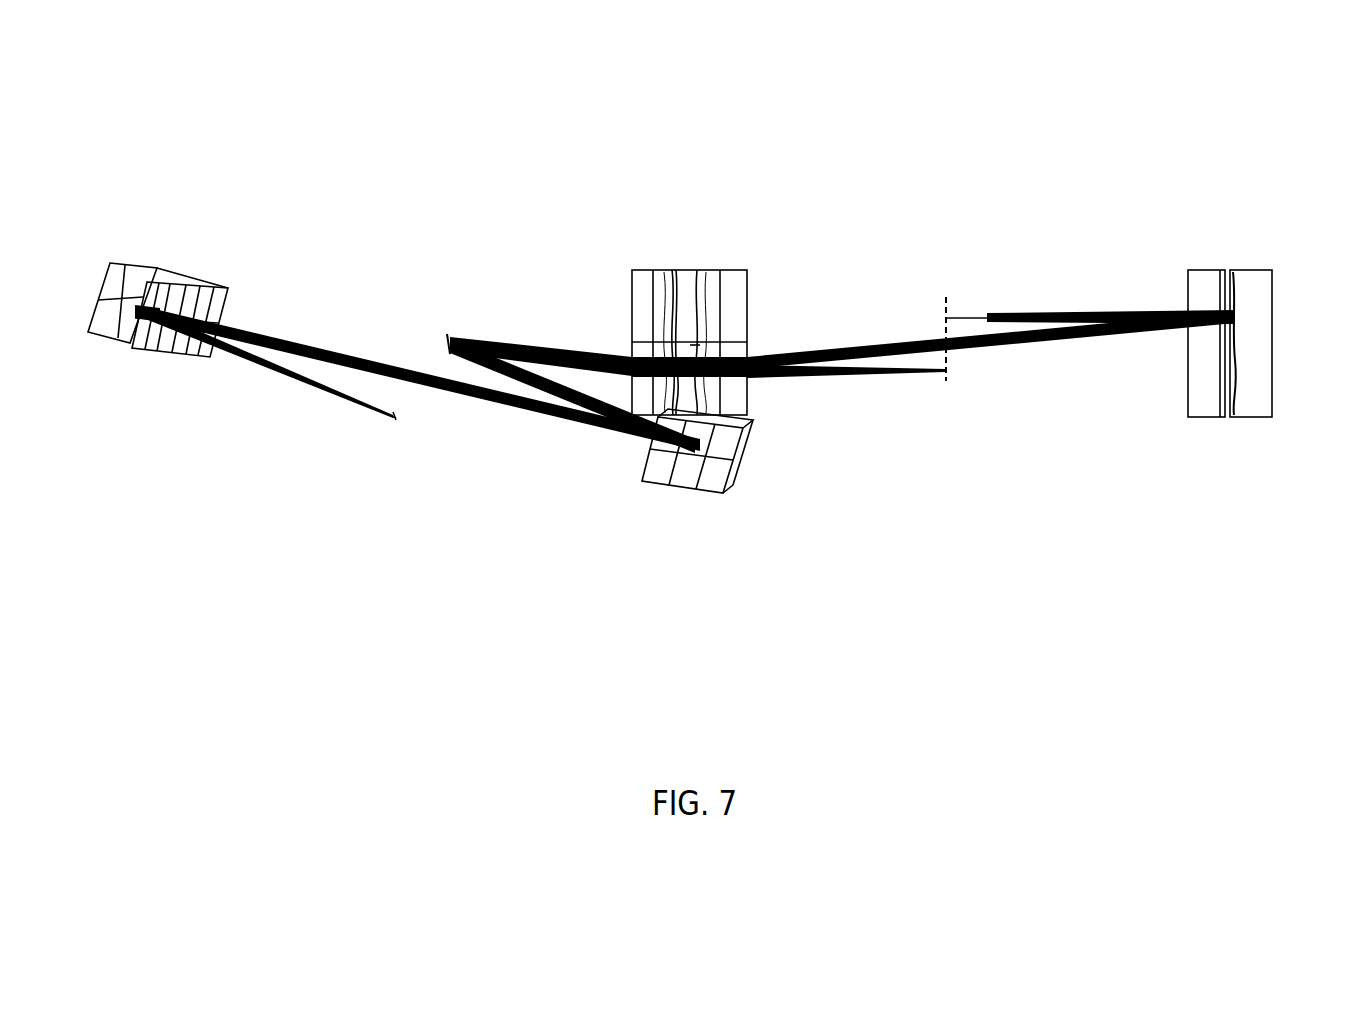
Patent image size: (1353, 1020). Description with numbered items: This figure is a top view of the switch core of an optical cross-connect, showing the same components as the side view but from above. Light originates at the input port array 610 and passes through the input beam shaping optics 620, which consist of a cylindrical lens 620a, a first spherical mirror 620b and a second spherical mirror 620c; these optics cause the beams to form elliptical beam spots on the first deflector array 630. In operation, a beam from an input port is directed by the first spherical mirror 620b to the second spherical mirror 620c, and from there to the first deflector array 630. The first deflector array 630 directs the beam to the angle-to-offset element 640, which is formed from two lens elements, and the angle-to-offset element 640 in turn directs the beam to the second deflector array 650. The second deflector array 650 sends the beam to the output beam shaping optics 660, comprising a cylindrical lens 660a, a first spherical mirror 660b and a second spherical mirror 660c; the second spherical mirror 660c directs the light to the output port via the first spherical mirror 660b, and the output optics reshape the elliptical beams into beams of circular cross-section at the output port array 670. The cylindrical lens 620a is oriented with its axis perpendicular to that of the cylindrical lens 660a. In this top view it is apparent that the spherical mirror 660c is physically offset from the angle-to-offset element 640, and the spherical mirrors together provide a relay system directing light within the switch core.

The input port array 610 is at (963, 295).
The input beam shaping optics 620 is at (1215, 240).
The cylindrical lens 620a is at (1205, 408).
The first spherical mirror 620b is at (1255, 418).
The second spherical mirror 620c is at (695, 373).
The first deflector array 630 is at (946, 388).
The angle-to-offset (ATO) element 640 is at (672, 245).
The second deflector array 650 is at (443, 320).
The output beam shaping optics 660 is at (165, 240).
The cylindrical lens 660a is at (175, 362).
The first spherical mirror 660b is at (112, 343).
The second spherical mirror 660c is at (643, 495).
The output port array 670 is at (395, 433).